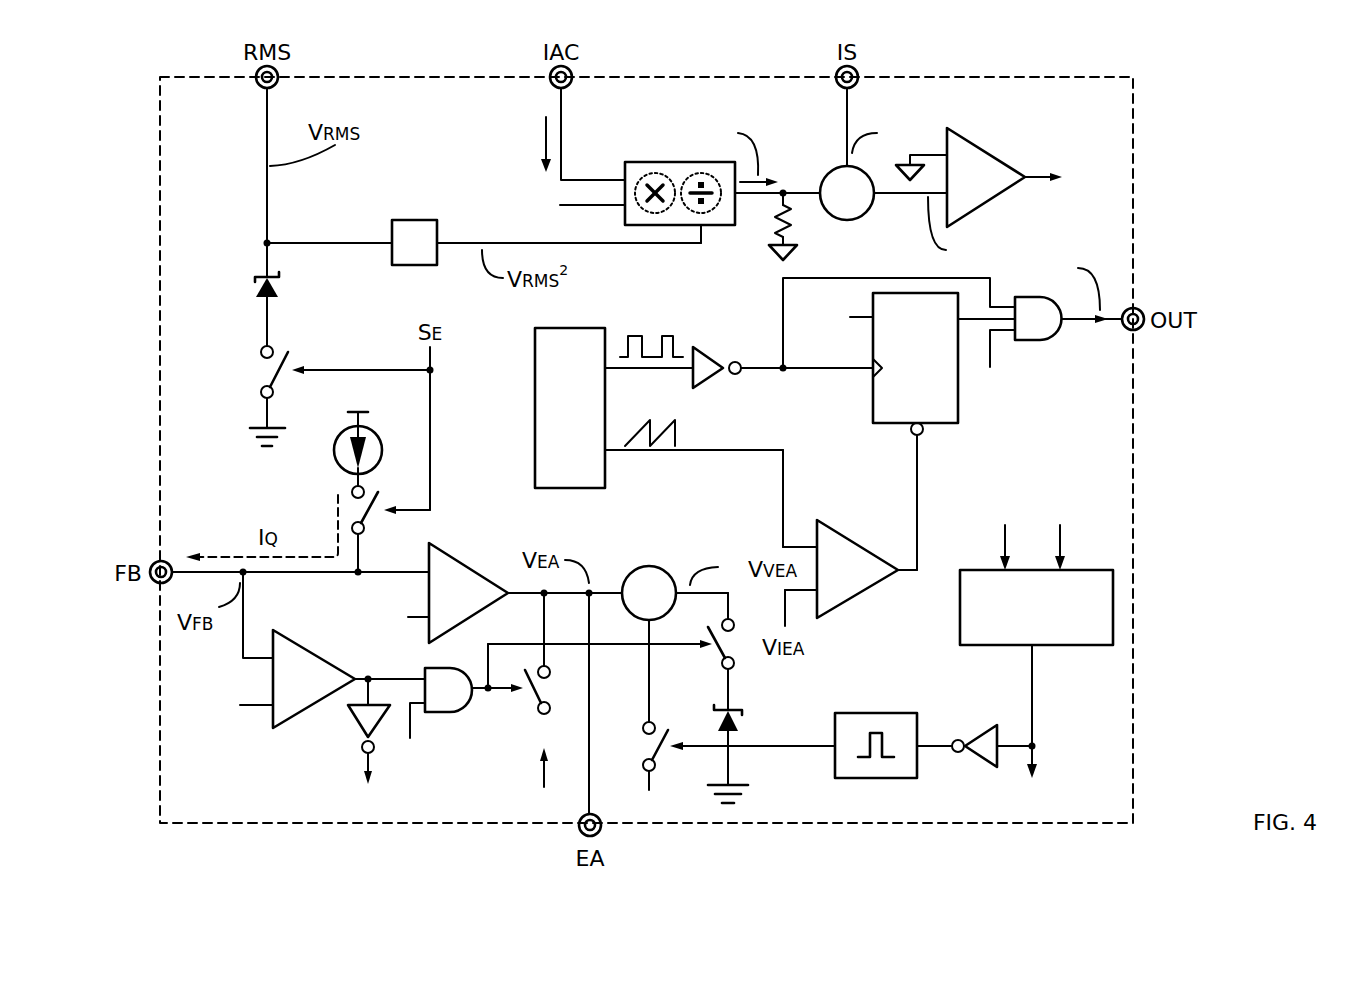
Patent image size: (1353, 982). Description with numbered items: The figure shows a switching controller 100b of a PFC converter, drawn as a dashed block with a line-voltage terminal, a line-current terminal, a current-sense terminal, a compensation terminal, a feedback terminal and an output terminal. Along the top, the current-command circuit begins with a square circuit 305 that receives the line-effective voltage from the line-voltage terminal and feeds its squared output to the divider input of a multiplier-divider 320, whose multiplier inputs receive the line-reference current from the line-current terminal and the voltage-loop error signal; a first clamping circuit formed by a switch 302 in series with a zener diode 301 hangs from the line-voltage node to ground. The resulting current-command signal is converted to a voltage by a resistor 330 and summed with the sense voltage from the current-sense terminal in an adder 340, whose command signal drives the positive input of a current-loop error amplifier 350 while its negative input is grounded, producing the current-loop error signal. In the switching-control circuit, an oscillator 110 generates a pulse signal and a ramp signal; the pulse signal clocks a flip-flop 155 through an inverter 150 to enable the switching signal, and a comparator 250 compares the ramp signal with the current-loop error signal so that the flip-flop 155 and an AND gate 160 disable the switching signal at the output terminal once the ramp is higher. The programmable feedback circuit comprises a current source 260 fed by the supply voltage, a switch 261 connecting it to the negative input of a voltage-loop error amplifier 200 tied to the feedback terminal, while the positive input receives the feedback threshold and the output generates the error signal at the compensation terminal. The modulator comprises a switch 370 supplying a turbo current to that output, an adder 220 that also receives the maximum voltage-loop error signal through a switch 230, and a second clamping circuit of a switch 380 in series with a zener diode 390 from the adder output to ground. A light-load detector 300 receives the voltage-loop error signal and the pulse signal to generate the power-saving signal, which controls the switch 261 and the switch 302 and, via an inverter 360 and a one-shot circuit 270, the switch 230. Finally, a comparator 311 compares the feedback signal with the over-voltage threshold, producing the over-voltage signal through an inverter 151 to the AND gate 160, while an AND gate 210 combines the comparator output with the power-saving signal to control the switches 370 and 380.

The switching controller 100b is at (1062, 76).
The zener diode 301 is at (255, 286).
The switch 302 is at (263, 373).
The square circuit 305 is at (390, 230).
The multiplier-divider 320 is at (653, 160).
The resistor 330 is at (795, 215).
The adder 340 is at (857, 222).
The current-loop error amplifier 350 is at (990, 150).
The oscillator 110 is at (580, 325).
The inverter 150 is at (713, 353).
The flip-flop 155 is at (943, 428).
The AND gate 160 is at (1032, 345).
The current source 260 is at (333, 449).
The switch 261 is at (373, 524).
The voltage-loop error amplifier 200 is at (468, 562).
The adder 220 is at (648, 565).
The comparator 250 is at (850, 537).
The light-load detector 300 is at (957, 597).
The comparator 311 is at (295, 637).
The inverter 151 is at (352, 725).
The AND gate 210 is at (437, 717).
The switch 370 is at (525, 702).
The zener diode 390 is at (718, 699).
The switch 380 is at (737, 641).
The switch 230 is at (640, 756).
The one-shot circuit 270 is at (891, 710).
The inverter 360 is at (980, 731).